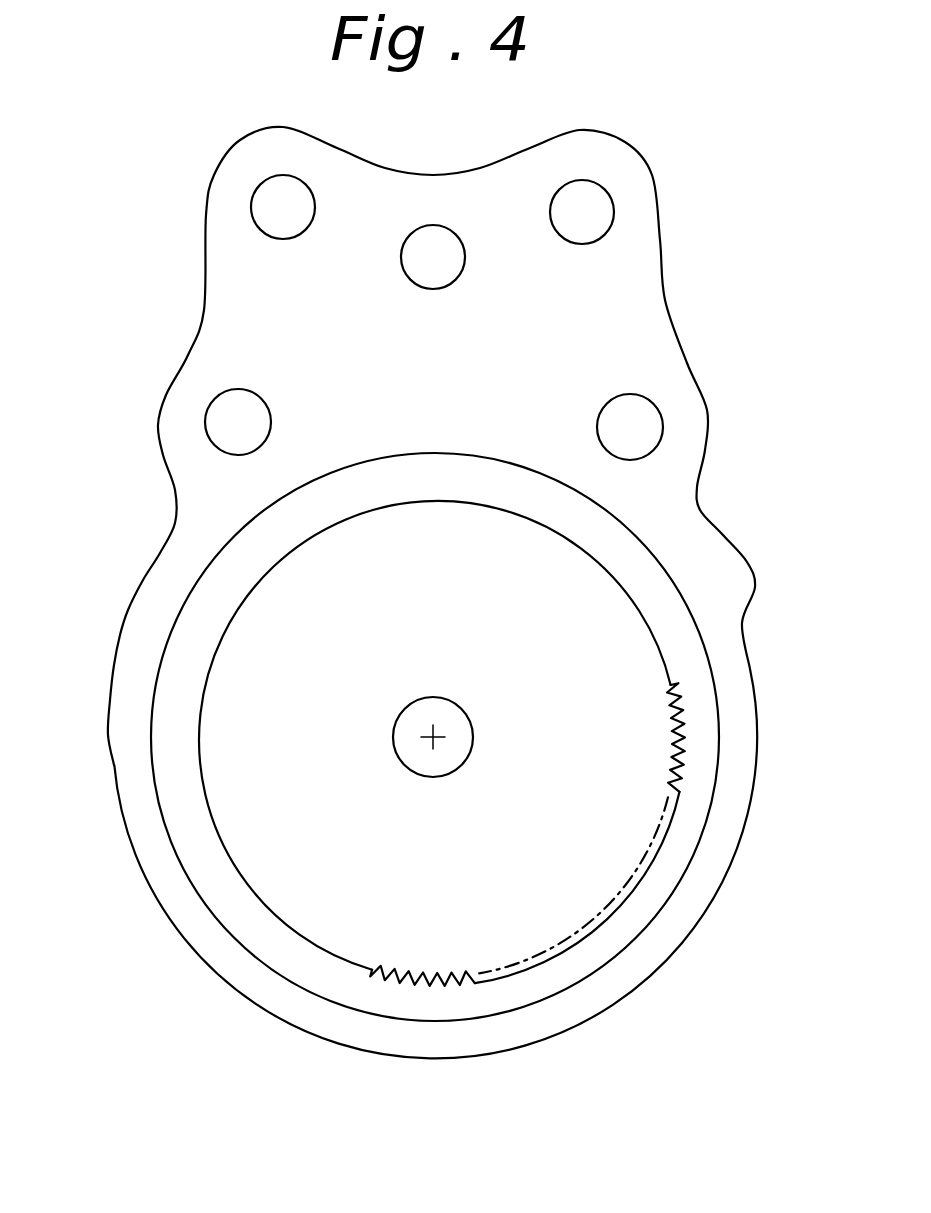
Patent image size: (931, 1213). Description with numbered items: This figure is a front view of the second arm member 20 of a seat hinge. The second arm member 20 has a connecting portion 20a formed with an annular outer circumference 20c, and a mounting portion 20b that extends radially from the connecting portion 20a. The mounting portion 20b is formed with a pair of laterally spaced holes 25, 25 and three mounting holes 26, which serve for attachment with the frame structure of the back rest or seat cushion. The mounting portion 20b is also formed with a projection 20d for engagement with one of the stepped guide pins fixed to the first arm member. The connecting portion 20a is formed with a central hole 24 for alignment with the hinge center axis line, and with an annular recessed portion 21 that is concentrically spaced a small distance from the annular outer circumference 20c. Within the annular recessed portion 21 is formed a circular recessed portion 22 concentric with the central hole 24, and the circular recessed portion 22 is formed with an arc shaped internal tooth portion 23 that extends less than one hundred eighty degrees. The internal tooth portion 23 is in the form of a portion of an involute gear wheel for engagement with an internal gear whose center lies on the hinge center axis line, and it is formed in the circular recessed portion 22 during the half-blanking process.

The second arm member 20 is at (170, 490).
The connecting portion 20a is at (723, 850).
The mounting portion 20b is at (640, 305).
The annular outer circumference 20c is at (625, 997).
The projection 20d is at (743, 572).
The annular recessed portion 21 is at (150, 763).
The circular recessed portion 22 is at (340, 522).
The arc shaped internal tooth portion 23 is at (425, 972).
The central hole 24 is at (456, 716).
The laterally spaced holes 25 is at (258, 415).
The mounting holes 26 is at (292, 231).